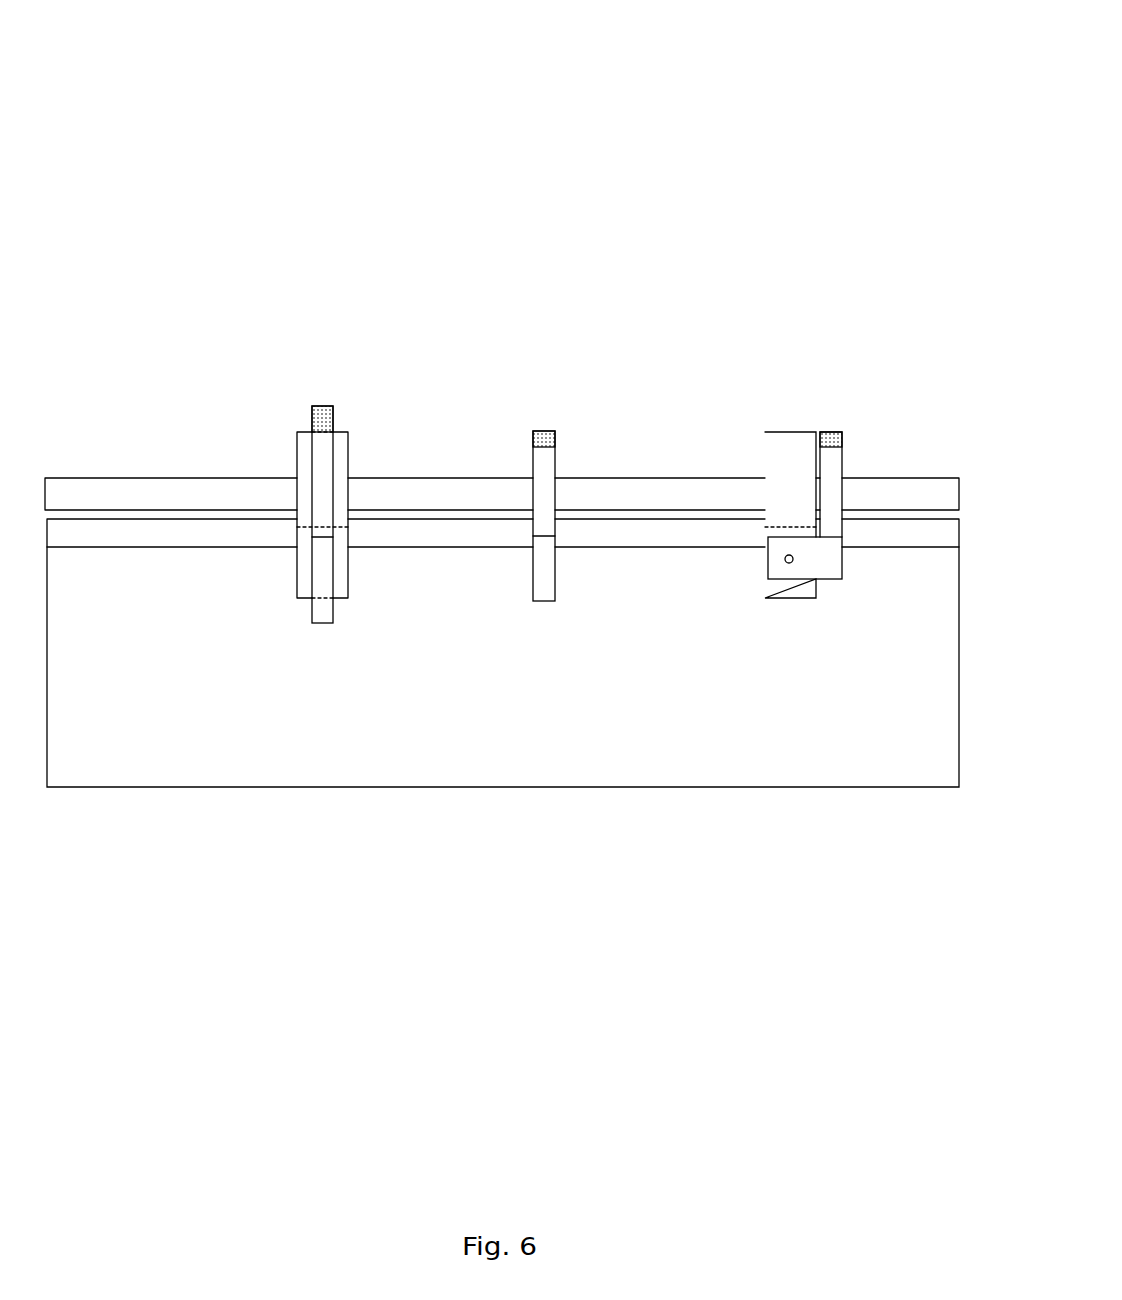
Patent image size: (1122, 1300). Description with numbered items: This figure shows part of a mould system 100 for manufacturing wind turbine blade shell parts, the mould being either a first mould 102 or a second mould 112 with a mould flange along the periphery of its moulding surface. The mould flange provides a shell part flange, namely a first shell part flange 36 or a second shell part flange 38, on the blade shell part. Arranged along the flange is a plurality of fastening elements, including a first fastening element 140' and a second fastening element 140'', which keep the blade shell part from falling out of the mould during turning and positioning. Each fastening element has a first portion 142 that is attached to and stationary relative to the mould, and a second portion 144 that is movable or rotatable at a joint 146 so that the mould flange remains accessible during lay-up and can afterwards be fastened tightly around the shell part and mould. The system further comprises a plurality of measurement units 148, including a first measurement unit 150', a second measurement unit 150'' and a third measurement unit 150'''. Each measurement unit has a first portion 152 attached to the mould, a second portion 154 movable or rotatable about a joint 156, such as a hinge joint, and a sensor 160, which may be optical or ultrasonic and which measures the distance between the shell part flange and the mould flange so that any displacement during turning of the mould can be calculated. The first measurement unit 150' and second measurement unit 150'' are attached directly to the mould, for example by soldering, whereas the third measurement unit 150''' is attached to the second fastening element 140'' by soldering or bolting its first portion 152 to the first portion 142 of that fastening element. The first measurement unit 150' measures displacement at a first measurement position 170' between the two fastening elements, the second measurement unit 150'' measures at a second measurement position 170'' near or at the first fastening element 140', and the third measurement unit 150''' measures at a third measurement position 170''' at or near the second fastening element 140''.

The mould system 100 is at (804, 80).
The first mould 102 is at (503, 607).
The second mould 112 is at (267, 752).
The first shell part flange 36 is at (502, 456).
The second shell part flange 38 is at (107, 503).
The connection elements 148 is at (606, 159).
The second measurement position 170'' is at (318, 431).
The first measurement position 170' is at (539, 456).
The third measurement position 170''' is at (821, 456).
The first fastening element 140' is at (271, 401).
The second fastening element 140'' is at (754, 506).
The second portion of the fastening element 144 is at (305, 470).
The first portion of the fastening element 142 is at (303, 588).
The joint 146 is at (298, 527).
The first measurement unit 150' is at (583, 496).
The second measurement unit 150'' is at (353, 474).
The third measurement unit 150''' is at (859, 496).
The second portion of the measurement unit 154 is at (330, 470).
The joint 156 is at (335, 538).
The first portion of the measurement unit 152 is at (327, 553).
The sensor 160 is at (322, 413).